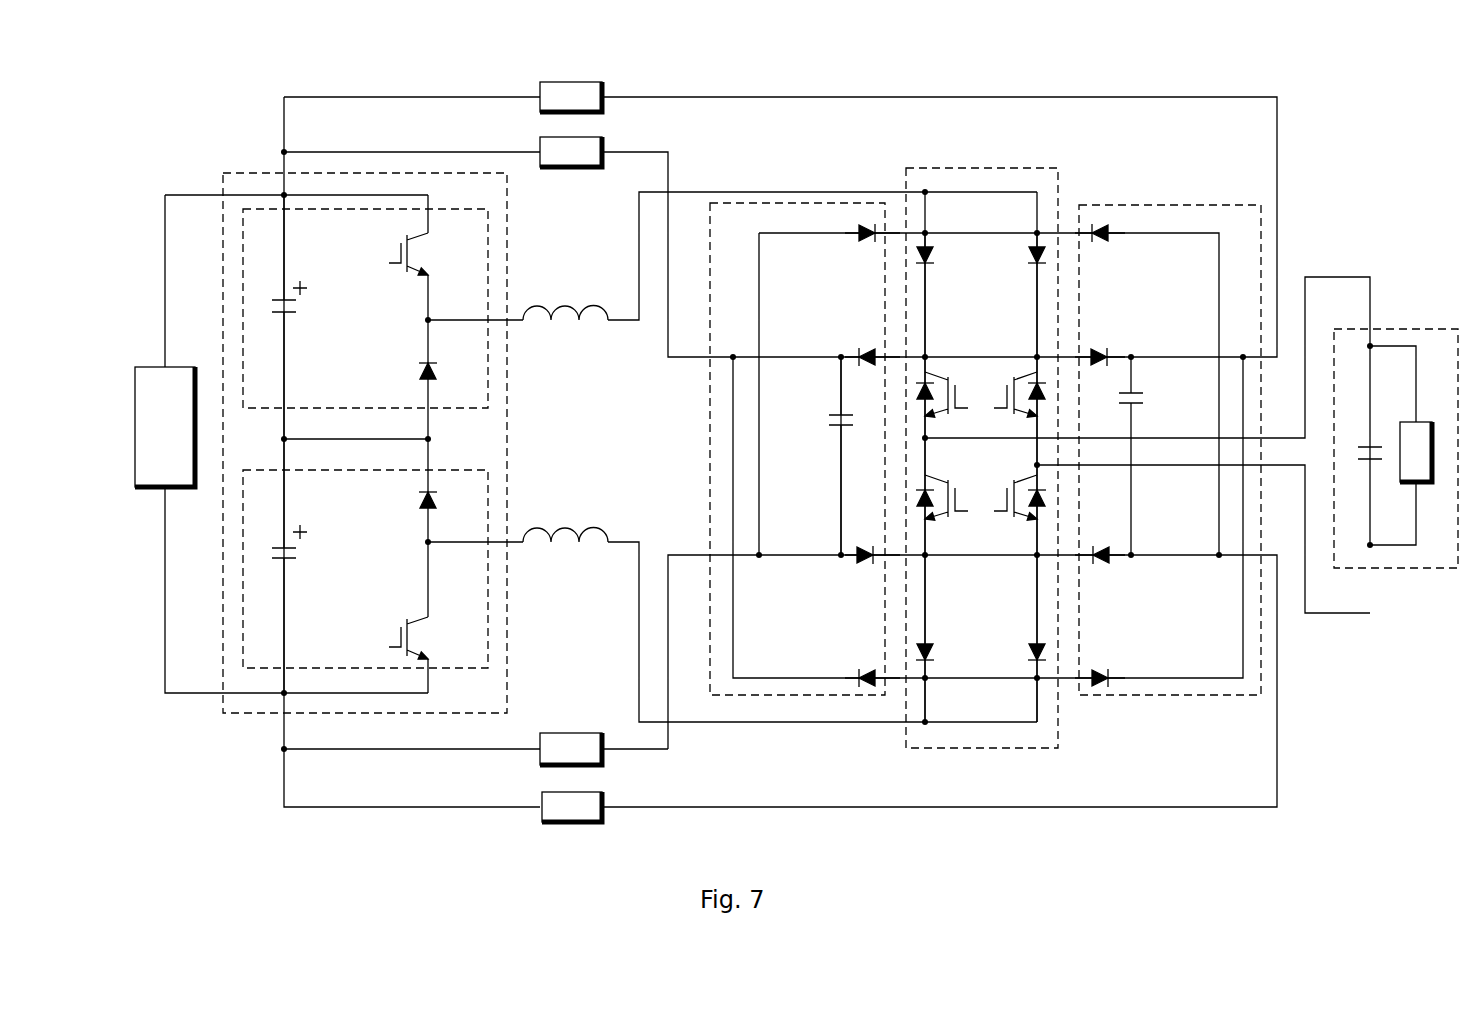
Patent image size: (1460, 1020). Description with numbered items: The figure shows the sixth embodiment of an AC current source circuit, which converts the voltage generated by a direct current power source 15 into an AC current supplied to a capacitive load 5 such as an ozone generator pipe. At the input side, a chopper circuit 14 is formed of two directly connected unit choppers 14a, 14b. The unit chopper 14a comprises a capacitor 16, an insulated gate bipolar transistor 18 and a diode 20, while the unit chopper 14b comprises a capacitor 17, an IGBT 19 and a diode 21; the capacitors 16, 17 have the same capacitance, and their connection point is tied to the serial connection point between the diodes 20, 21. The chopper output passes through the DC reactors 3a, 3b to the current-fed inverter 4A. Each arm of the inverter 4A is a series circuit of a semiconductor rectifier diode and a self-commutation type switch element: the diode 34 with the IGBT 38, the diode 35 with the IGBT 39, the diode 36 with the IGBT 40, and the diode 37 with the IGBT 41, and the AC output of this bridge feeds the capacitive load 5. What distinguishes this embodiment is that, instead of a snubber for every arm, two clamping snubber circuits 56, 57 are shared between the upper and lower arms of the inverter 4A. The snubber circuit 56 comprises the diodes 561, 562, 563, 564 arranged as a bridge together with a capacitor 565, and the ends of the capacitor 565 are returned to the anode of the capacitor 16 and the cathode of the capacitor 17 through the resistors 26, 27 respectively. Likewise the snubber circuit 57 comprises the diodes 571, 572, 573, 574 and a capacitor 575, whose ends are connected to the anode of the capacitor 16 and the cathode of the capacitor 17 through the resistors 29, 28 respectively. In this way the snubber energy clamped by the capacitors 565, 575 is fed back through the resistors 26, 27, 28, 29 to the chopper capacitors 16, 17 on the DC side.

The direct current power source 15 is at (183, 438).
The chopper circuit 14 is at (506, 405).
The unit chopper 14a is at (488, 355).
The unit chopper 14b is at (488, 497).
The capacitor 16 is at (290, 314).
The capacitor 17 is at (290, 560).
The insulated gate bi-polar transistor 18 is at (426, 254).
The IGBT 19 is at (426, 634).
The diode 20 is at (410, 374).
The diode 21 is at (422, 504).
The DC reactor 3a is at (568, 312).
The DC reactor 3b is at (563, 548).
The resistor 26 is at (560, 168).
The resistor 27 is at (556, 733).
The resistor 28 is at (604, 803).
The resistor 29 is at (580, 82).
The snubber circuit 56 is at (710, 452).
The diode 561 is at (866, 240).
The diode 562 is at (872, 348).
The diode 563 is at (870, 562).
The diode 564 is at (868, 668).
The capacitor 565 is at (839, 427).
The current-fed inverter 4A is at (957, 168).
The diode 34 is at (932, 255).
The diode 36 is at (1030, 255).
The diode 35 is at (932, 652).
The diode 37 is at (1030, 652).
The IGBT 38 is at (960, 354).
The IGBT 39 is at (950, 522).
The IGBT 40 is at (1012, 372).
The IGBT 41 is at (1012, 522).
The snubber circuit 57 is at (1115, 697).
The diode 571 is at (1100, 243).
The diode 572 is at (1100, 348).
The diode 573 is at (1100, 565).
The diode 574 is at (1100, 669).
The capacitor 575 is at (1140, 400).
The capacitive load 5 is at (1398, 328).